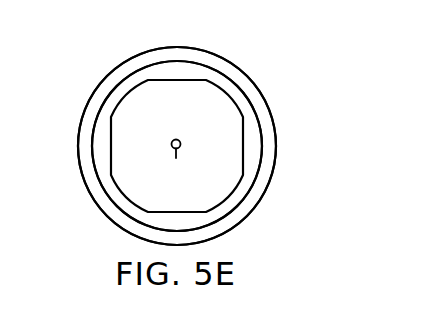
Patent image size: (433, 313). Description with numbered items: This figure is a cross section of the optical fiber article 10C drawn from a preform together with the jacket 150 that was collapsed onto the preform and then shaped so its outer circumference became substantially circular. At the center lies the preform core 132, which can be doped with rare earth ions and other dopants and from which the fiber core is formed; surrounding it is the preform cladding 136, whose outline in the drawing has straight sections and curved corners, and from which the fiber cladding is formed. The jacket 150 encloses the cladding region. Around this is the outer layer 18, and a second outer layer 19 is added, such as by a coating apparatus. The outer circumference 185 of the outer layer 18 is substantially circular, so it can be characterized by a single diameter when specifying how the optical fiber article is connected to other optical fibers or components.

The optical fiber article 10C is at (174, 127).
The second outer layer 19 is at (270, 145).
The outer circumference of the outer layer 185 is at (247, 202).
The outer layer 18 is at (123, 200).
The jacket 150 is at (224, 86).
The preform cladding 136 is at (121, 137).
The preform core 132 is at (180, 166).